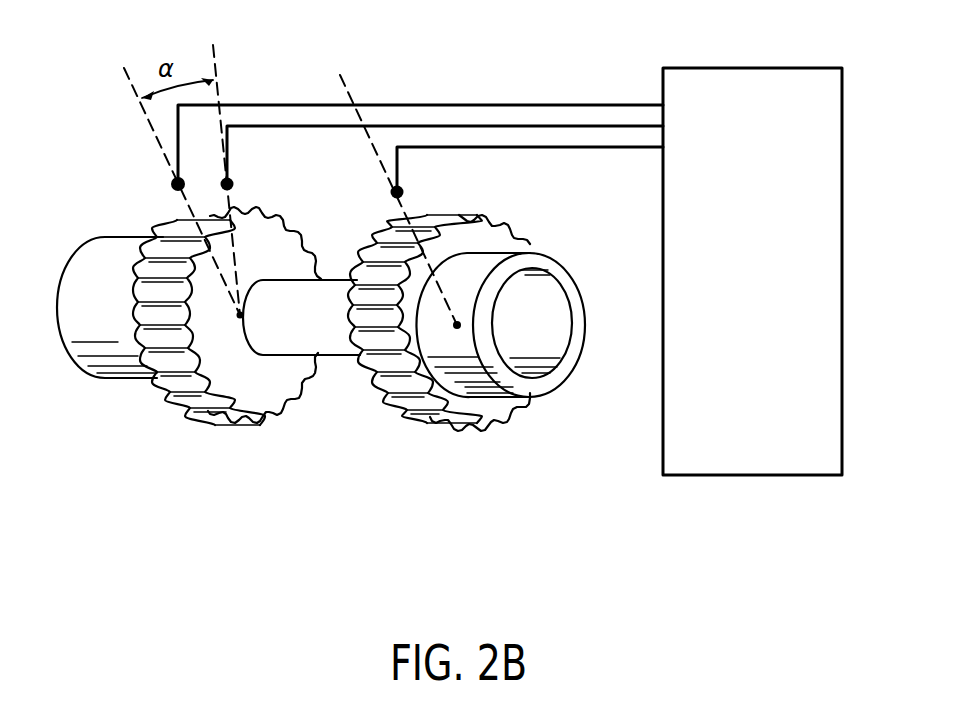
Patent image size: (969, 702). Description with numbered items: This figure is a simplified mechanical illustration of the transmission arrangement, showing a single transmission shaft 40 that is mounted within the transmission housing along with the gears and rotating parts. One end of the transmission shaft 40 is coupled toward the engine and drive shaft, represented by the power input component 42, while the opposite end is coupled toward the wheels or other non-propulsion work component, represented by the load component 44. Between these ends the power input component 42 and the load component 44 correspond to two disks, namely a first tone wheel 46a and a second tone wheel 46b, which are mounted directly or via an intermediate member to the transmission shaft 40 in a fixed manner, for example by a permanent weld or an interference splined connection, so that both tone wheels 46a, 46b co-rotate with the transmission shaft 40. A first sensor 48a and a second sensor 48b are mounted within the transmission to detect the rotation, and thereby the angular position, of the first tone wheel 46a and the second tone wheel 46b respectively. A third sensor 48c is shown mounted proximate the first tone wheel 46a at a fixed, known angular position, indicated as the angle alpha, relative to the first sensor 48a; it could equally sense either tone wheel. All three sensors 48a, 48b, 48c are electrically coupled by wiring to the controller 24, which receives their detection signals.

The controller 24 is at (752, 68).
The transmission shaft 40 is at (335, 347).
The power input component 42 is at (67, 297).
The load component 44 is at (570, 372).
The first tone wheel 46a is at (281, 390).
The second tone wheel 46b is at (478, 410).
The first sensor 48a is at (176, 188).
The second sensor 48b is at (403, 190).
The third sensor 48c is at (233, 183).